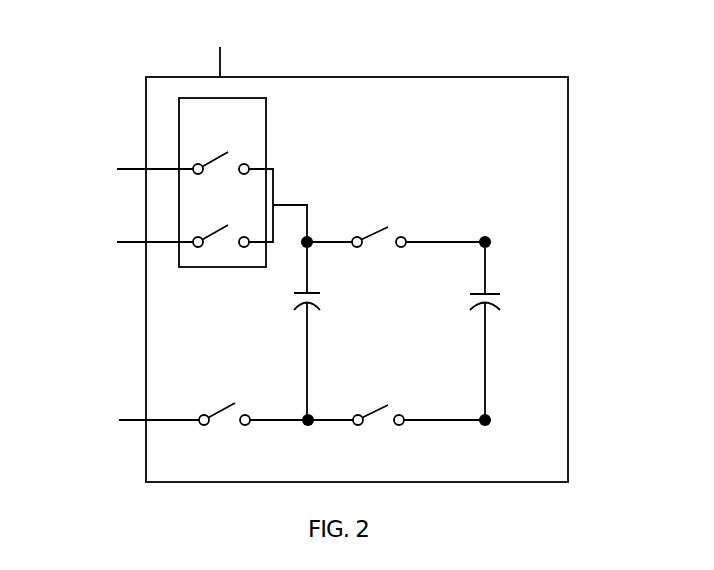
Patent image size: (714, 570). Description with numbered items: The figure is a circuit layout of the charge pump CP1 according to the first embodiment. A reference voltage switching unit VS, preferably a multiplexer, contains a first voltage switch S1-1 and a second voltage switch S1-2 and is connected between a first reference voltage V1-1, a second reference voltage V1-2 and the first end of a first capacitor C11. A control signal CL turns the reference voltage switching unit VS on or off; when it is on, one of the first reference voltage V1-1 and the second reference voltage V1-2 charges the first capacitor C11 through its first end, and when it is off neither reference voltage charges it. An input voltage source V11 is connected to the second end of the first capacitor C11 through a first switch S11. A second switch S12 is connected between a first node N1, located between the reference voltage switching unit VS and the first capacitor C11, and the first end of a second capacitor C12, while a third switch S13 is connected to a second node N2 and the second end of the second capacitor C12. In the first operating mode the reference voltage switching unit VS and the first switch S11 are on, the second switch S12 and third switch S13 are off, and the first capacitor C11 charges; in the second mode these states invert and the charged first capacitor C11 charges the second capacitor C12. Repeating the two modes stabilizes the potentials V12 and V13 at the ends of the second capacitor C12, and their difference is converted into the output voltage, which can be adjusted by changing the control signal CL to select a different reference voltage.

The charge pump CP1 is at (583, 100).
The control signal CL is at (221, 42).
The reference voltage switching unit VS is at (266, 128).
The second voltage switch S1-2 is at (224, 143).
The first voltage switch S1-1 is at (224, 218).
The second reference voltage V1-2 is at (115, 167).
The first reference voltage V1-1 is at (115, 241).
The first node N1 is at (325, 261).
The second switch S12 is at (396, 215).
The potential at first end of second capacitor V12 is at (514, 224).
The first capacitor C11 is at (271, 334).
The second capacitor C12 is at (452, 334).
The input voltage source V11 is at (119, 422).
The first switch S11 is at (250, 435).
The second node N2 is at (307, 440).
The third switch S13 is at (396, 437).
The potential at second end of second capacitor V13 is at (515, 438).